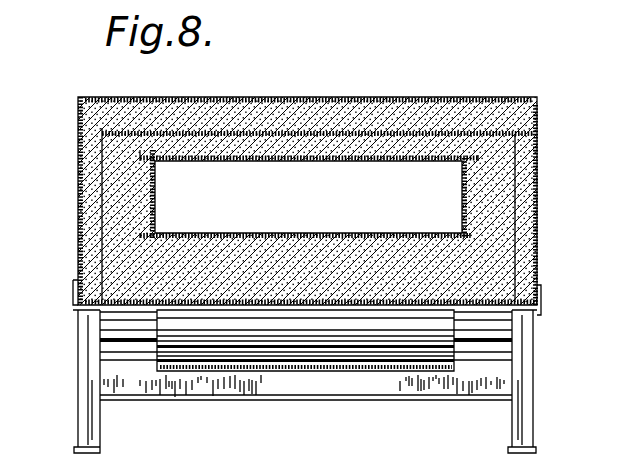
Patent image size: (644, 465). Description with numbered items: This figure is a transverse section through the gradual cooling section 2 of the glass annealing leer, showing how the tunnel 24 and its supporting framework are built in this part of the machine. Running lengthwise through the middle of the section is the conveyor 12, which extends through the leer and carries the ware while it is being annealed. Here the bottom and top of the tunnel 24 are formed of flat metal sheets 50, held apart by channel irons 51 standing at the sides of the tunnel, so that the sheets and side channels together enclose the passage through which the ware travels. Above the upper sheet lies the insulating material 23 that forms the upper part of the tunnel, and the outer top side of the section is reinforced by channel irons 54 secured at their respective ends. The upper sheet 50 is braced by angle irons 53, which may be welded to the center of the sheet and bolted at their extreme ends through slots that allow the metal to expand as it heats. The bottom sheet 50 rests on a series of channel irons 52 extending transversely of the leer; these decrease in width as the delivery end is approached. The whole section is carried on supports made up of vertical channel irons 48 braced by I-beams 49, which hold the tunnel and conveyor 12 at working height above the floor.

The gradual cooling section 2 is at (453, 100).
The conveyor 12 is at (270, 238).
The insulating material 23 is at (110, 141).
The tunnel 24 is at (184, 183).
The vertical channel irons 48 is at (90, 436).
The I-beams 49 is at (263, 385).
The flat metal sheets 50 is at (342, 157).
The channel irons 51 is at (135, 204).
The channel irons 52 is at (538, 263).
The angle irons 53 is at (534, 139).
The channel irons 54 is at (118, 118).